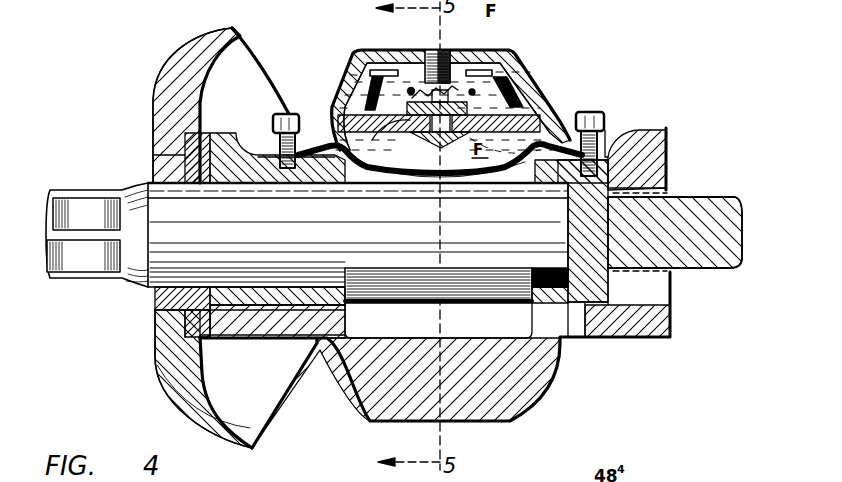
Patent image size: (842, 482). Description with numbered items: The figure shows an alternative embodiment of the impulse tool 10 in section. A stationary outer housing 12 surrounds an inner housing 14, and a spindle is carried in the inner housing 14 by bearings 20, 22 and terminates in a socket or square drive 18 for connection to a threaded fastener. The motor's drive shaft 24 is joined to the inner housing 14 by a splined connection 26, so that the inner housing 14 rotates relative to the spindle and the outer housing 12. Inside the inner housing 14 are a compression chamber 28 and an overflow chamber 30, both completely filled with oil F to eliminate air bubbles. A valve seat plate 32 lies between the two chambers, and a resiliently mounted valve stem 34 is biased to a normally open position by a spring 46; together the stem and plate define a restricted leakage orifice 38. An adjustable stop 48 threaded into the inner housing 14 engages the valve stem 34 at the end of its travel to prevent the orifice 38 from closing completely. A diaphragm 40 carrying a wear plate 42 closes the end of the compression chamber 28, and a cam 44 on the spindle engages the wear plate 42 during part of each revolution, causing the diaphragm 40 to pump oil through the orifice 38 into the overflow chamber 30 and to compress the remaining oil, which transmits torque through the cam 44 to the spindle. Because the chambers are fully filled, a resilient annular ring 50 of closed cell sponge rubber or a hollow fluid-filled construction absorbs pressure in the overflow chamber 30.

The impulse tool 10 is at (609, 69).
The stationary outer housing 12 is at (180, 377).
The inner housing 14 is at (530, 92).
The socket or square drive 18 is at (78, 210).
The bearing 20 is at (165, 170).
The bearing 22 is at (583, 303).
The drive shaft 24 is at (718, 232).
The splined connection 26 is at (640, 275).
The compression chamber 28 is at (507, 150).
The overflow chamber 30 is at (414, 56).
The valve seat plate 32 is at (340, 120).
The valve stem 34 is at (452, 142).
The leakage orifice 38 is at (406, 128).
The diaphragm 40 is at (362, 170).
The wear plate 42 is at (405, 178).
The cam 44 is at (456, 303).
The spring 46 is at (455, 88).
The adjustable stop 48 is at (424, 56).
The resilient annular ring 50 is at (509, 42).